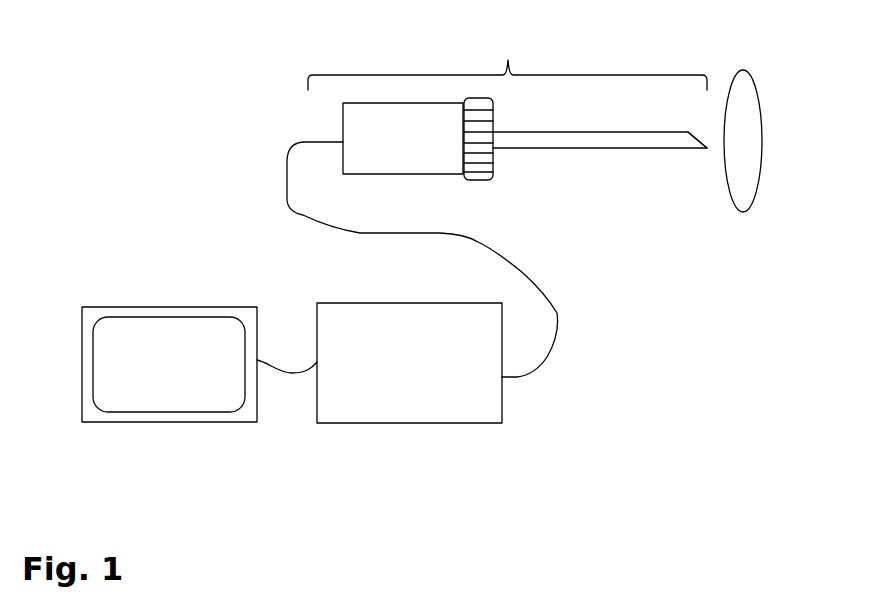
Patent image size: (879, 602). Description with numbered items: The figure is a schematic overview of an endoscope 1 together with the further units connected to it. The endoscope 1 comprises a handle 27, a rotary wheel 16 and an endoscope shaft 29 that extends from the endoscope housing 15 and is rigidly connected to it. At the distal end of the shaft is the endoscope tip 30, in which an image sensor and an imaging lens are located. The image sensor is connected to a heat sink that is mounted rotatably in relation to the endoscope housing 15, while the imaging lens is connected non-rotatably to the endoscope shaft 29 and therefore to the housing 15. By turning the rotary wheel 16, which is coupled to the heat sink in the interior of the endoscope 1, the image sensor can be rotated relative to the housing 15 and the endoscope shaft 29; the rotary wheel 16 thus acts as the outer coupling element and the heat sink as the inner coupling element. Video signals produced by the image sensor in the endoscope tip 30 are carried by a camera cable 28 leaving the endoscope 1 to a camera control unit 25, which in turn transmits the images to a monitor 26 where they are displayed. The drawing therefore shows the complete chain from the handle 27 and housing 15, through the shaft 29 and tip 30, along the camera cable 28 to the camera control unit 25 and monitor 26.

The endoscope 1 is at (507, 56).
The endoscope housing 15 is at (353, 120).
The rotary wheel 16 is at (478, 160).
The camera control unit 25 is at (450, 380).
The monitor 26 is at (143, 368).
The handle 27 is at (418, 158).
The camera cable 28 is at (298, 147).
The endoscope shaft 29 is at (585, 142).
The endoscope tip 30 is at (692, 143).